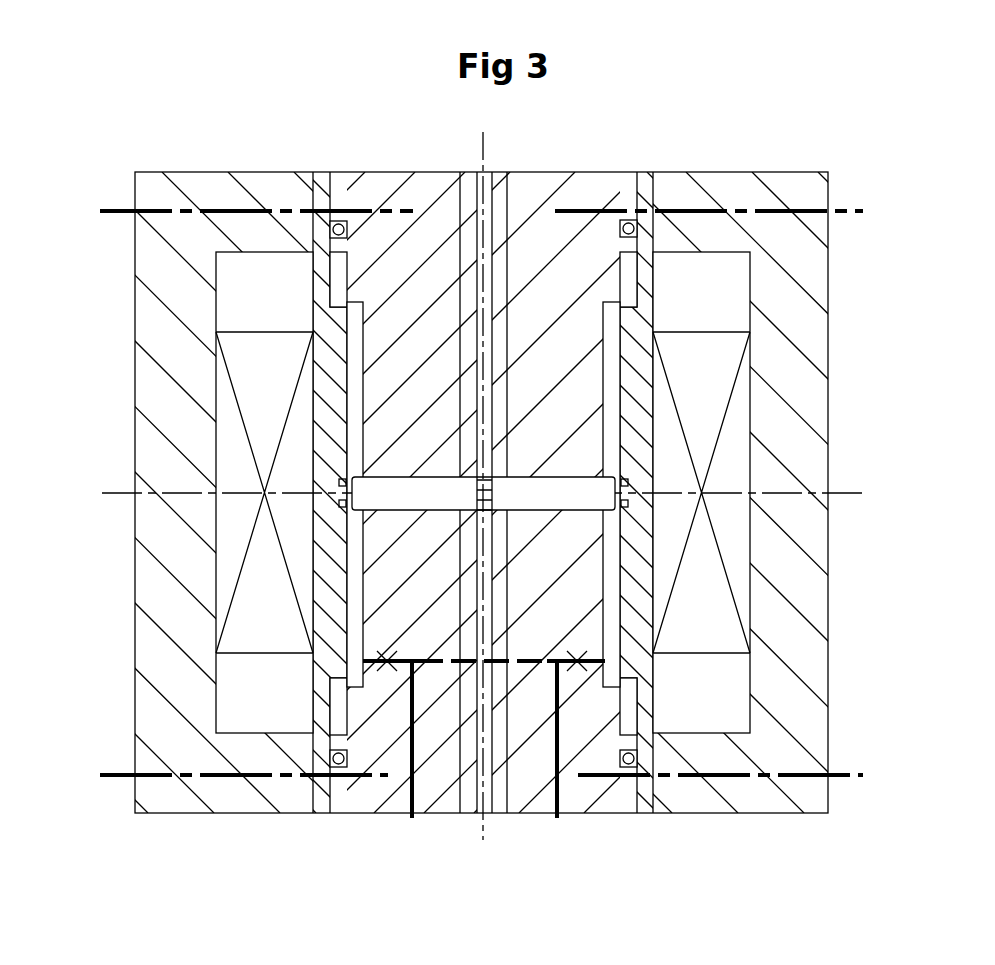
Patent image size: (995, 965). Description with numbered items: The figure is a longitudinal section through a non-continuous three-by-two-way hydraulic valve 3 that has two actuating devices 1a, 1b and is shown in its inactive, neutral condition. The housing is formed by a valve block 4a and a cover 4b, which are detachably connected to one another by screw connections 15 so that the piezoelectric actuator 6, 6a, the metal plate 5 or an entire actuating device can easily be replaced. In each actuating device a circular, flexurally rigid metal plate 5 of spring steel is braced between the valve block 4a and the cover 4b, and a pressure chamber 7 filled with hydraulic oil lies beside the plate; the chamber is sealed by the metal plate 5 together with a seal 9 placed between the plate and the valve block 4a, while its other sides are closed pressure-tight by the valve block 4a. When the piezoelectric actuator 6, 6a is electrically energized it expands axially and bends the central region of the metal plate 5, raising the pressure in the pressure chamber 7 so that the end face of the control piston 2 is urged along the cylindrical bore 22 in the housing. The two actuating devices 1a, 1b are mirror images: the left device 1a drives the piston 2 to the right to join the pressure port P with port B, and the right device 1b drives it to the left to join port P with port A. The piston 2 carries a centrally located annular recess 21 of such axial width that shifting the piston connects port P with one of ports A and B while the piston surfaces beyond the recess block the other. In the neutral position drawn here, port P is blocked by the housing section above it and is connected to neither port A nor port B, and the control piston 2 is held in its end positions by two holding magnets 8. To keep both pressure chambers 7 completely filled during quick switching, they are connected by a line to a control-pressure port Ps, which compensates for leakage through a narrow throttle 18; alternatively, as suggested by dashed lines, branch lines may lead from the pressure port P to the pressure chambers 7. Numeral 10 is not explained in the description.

The left actuating device 1a is at (327, 157).
The right actuating device 1b is at (650, 165).
The control piston 2 is at (572, 483).
The hydraulic valve 3 is at (597, 101).
The valve block 4a is at (603, 802).
The cover 4b is at (185, 805).
The metal plate 5 is at (320, 805).
The piezoelectric actuator 6 is at (264, 492).
The piezoelectric actuator 6a is at (701, 492).
The pressure chamber 7 is at (353, 570).
The holding magnets 8 is at (337, 483).
The seal 9 is at (330, 228).
The lower bearing ring 10 is at (337, 498).
The screw connections 15 is at (112, 780).
The throttle 18 is at (379, 643).
The recess 21 is at (478, 490).
The bore 22 is at (482, 488).
The port A is at (472, 173).
The port B is at (498, 173).
The pressure port P is at (490, 813).
The control-pressure port Ps is at (412, 817).